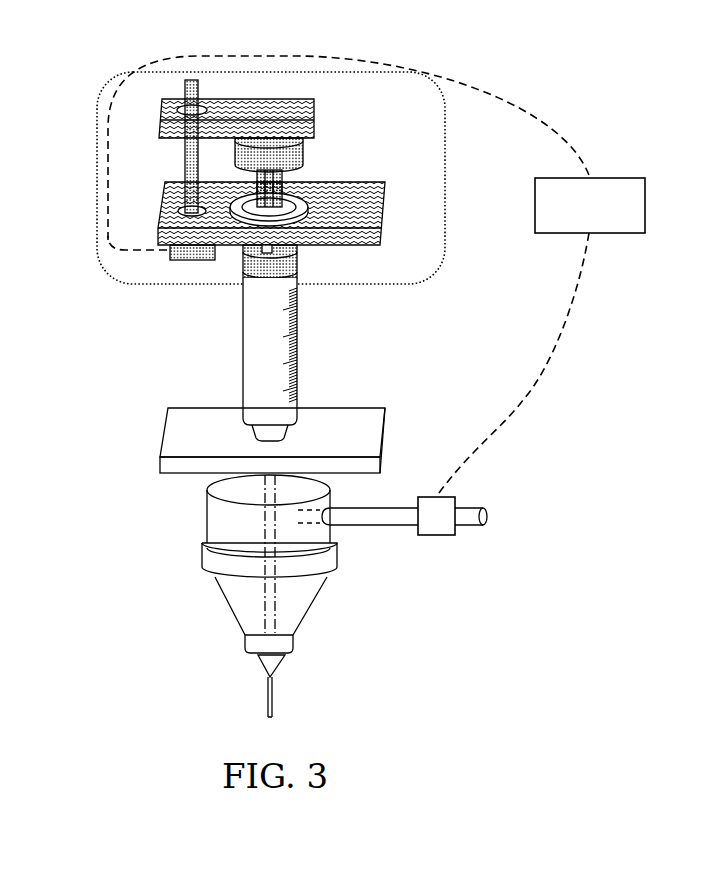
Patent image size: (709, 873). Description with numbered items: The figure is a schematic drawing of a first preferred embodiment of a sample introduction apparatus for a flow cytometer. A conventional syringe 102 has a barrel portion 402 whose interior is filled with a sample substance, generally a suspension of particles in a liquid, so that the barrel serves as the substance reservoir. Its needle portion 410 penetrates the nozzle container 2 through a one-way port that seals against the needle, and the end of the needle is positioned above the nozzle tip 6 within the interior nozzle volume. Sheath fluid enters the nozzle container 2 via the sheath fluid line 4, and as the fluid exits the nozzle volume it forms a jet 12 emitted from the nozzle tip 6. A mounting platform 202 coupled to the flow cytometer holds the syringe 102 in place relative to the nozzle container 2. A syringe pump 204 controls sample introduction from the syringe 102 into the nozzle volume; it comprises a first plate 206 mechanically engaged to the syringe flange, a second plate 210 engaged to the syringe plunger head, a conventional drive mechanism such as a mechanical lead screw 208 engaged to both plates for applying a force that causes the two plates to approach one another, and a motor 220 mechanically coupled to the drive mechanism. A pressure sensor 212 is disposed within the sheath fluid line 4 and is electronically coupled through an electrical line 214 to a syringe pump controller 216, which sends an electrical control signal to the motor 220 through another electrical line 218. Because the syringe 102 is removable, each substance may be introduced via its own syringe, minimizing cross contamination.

The nozzle container 2 is at (317, 595).
The sheath fluid line 4 is at (367, 505).
The nozzle tip 6 is at (272, 678).
The jet 12 is at (273, 702).
The syringe 102 is at (330, 328).
The mounting platform 202 is at (388, 413).
The syringe pump 204 is at (97, 150).
The first plate 206 is at (386, 186).
The mechanical lead screw 208 is at (185, 157).
The second plate 210 is at (314, 112).
The pressure sensor 212 is at (437, 535).
The electrical line 214 is at (523, 400).
The syringe pump controller 216 is at (623, 177).
The electrical line 218 is at (535, 90).
The motor 220 is at (188, 262).
The barrel portion 402 is at (243, 343).
The needle portion 410 is at (263, 520).